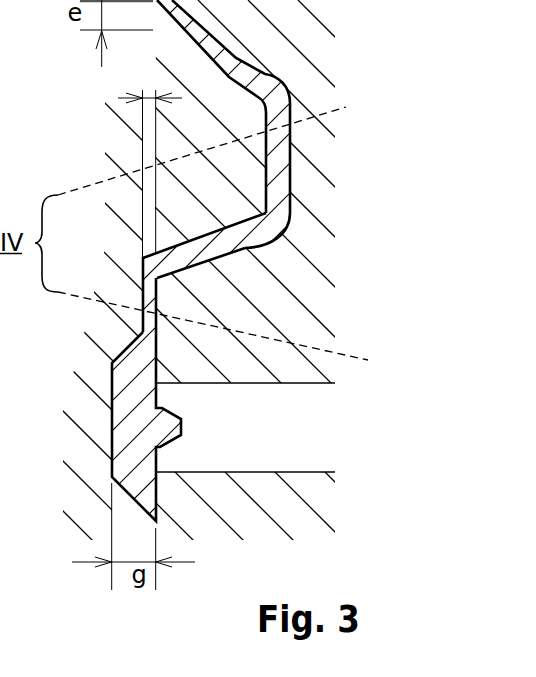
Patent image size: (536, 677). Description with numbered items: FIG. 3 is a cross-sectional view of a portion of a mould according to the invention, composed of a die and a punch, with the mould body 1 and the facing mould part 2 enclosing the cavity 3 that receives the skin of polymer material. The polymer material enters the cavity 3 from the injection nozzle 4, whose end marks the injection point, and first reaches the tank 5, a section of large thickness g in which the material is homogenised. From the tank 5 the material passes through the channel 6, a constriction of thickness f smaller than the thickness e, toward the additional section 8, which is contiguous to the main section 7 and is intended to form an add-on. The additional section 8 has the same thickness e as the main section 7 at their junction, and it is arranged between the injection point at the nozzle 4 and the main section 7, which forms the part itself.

The housing 1 is at (308, 82).
The shaft / inner body 2 is at (130, 153).
The cavity 3 is at (250, 71).
The injection nozzle 4 is at (291, 440).
The tank 5 is at (123, 410).
The channel 6 is at (148, 293).
The main section 7 is at (281, 153).
The additional section 8 is at (238, 252).